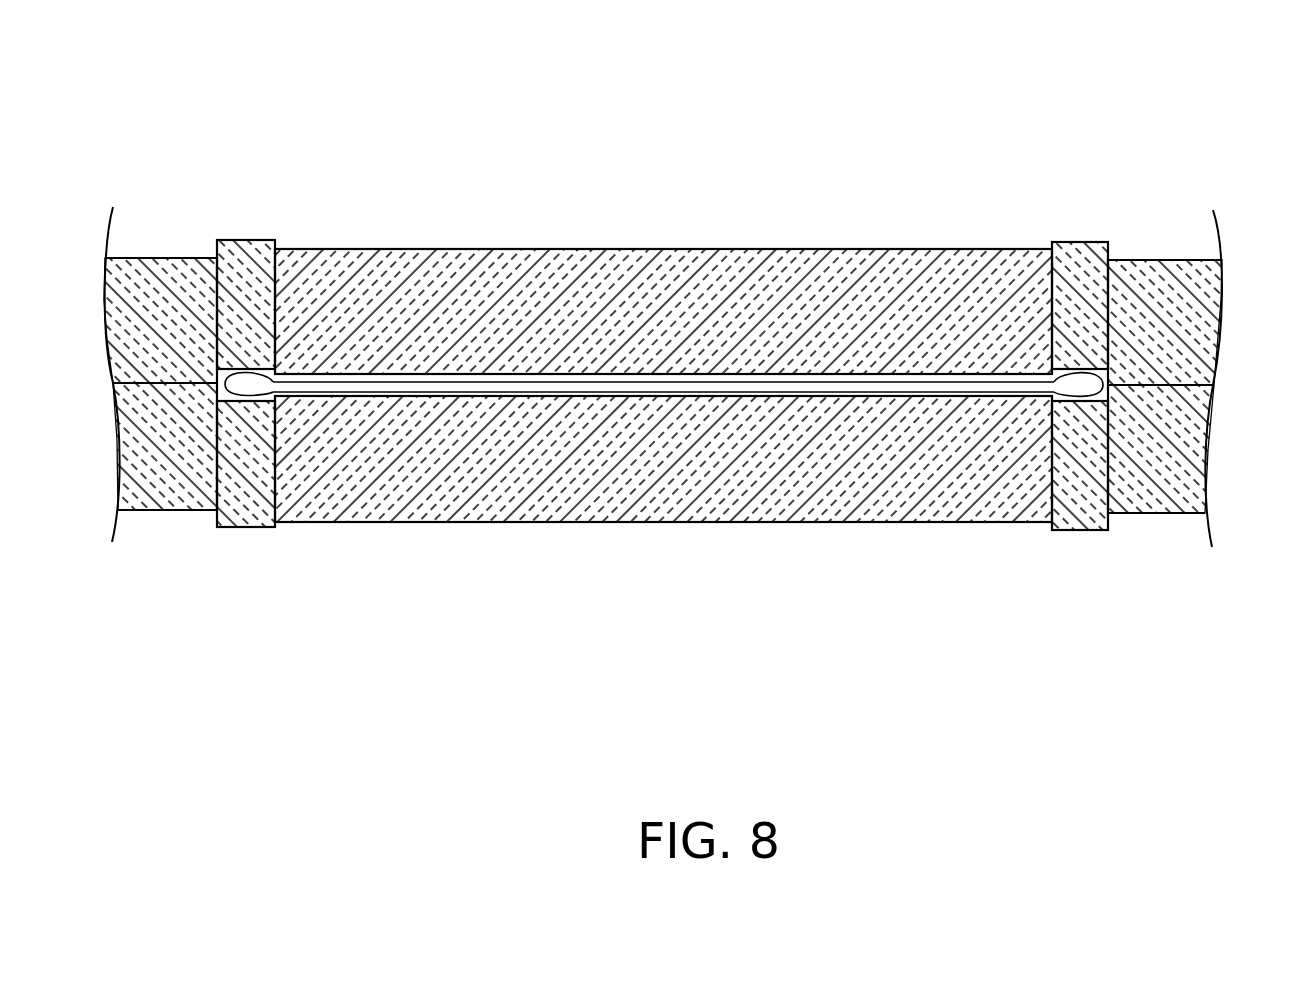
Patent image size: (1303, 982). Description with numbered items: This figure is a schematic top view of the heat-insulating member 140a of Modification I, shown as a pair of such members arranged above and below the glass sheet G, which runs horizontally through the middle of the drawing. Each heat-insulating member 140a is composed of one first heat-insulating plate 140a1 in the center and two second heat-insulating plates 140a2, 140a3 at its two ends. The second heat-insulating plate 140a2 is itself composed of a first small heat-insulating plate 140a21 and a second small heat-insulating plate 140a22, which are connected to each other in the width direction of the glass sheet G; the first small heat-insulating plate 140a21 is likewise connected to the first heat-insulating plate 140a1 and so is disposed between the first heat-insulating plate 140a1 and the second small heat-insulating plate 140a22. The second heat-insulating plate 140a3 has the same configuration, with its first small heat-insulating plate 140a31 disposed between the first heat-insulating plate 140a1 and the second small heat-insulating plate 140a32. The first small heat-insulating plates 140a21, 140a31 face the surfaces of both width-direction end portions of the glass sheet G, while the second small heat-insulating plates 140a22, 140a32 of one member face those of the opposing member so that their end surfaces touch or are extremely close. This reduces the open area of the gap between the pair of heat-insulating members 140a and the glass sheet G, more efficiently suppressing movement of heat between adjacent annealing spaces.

The heat-insulating member 140a is at (873, 132).
The first heat-insulating plate 140a1 is at (668, 272).
The second heat-insulating plate 140a2 is at (302, 167).
The first small heat-insulating plate 140a21 is at (252, 272).
The second small heat-insulating plate 140a22 is at (162, 277).
The second heat-insulating plate 140a3 is at (1228, 165).
The first small heat-insulating plate 140a31 is at (1083, 265).
The second small heat-insulating plate 140a32 is at (1172, 290).
The glass sheet G is at (1078, 388).